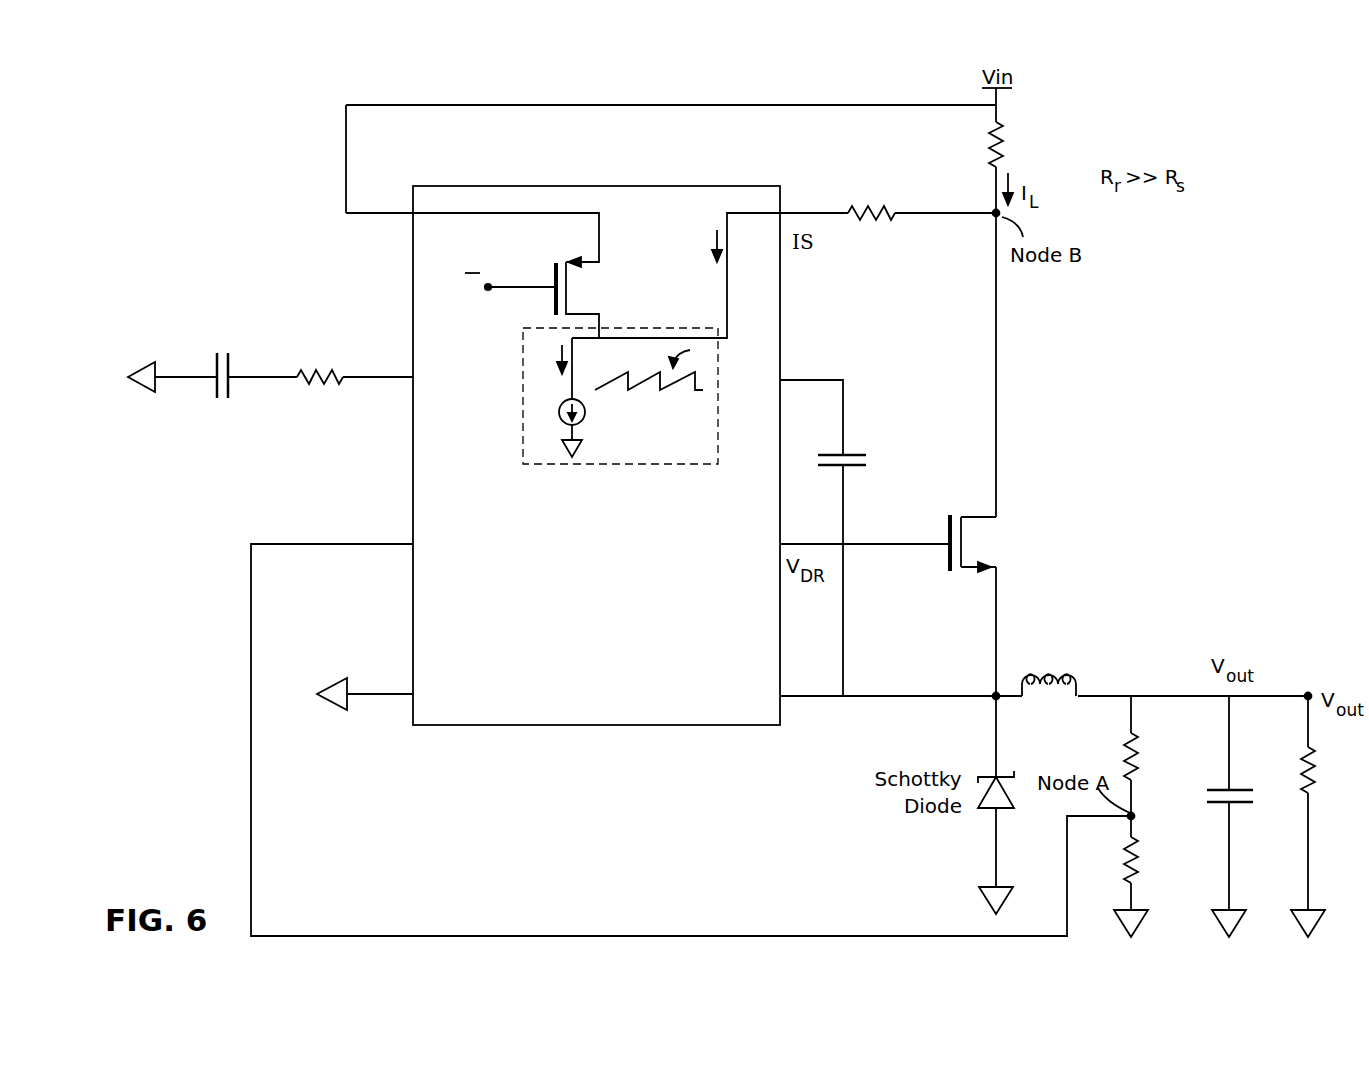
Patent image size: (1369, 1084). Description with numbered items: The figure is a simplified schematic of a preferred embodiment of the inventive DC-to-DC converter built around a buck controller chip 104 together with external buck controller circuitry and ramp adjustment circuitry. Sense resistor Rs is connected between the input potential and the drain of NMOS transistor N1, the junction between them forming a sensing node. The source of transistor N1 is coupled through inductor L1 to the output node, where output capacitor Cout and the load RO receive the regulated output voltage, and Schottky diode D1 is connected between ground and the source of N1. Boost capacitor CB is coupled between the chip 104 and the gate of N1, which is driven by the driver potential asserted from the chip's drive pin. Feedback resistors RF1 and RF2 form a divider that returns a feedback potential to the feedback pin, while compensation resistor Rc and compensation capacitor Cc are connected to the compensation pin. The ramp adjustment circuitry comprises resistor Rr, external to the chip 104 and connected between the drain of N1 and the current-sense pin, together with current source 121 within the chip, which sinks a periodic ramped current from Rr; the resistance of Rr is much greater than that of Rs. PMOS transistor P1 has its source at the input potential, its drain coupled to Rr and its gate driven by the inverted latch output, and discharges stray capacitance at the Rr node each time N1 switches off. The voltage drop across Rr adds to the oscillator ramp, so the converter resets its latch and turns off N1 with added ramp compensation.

The controller chip 104 is at (563, 429).
The current source 121 is at (523, 425).
The PMOS transistor P1 is at (591, 258).
The NMOS transistor N1 is at (971, 513).
The Schottky diode D1 is at (1003, 772).
The inductor L1 is at (1049, 671).
The sense resistor Rs is at (1013, 144).
The resistor Rr is at (871, 232).
The compensation capacitor Cc is at (221, 401).
The compensation resistor Rc is at (320, 397).
The boost capacitor CB is at (853, 443).
The feedback resistor RF1 is at (1152, 756).
The feedback resistor RF2 is at (1152, 860).
The output capacitor Cout is at (1244, 781).
The load RO is at (1325, 771).